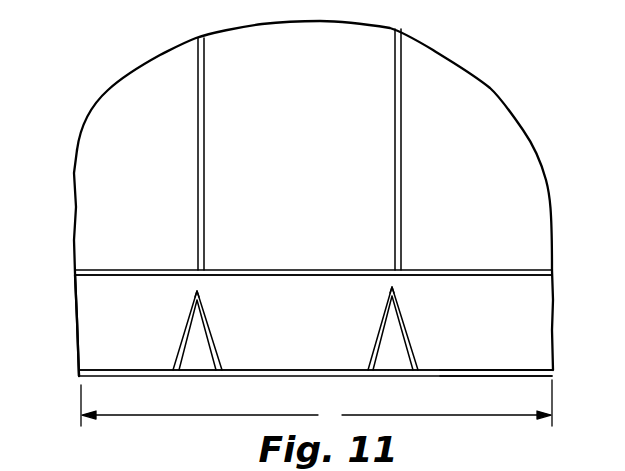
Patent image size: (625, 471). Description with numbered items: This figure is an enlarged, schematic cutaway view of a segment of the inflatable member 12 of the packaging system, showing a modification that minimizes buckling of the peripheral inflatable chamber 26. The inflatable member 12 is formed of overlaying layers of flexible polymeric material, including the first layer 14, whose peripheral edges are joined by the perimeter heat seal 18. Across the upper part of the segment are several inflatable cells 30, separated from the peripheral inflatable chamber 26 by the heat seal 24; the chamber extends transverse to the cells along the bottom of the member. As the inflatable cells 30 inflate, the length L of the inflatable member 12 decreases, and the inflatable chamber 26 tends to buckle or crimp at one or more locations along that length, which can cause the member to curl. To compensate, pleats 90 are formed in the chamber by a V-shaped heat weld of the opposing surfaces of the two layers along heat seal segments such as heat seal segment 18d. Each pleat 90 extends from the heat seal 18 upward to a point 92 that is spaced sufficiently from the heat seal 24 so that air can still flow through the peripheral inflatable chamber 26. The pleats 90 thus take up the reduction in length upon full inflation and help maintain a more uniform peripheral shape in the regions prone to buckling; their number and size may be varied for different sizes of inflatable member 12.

The inflatable member 12 is at (518, 53).
The first layer 14 is at (553, 290).
The perimeter heat seal 18 is at (300, 369).
The heat seal segment 18d is at (493, 369).
The heat seal 24 is at (315, 268).
The peripheral inflatable chamber 26 is at (90, 338).
The inflatable cell 30 is at (125, 183).
The pleat 90 is at (212, 341).
The point 92 is at (195, 293).
The length L is at (316, 404).